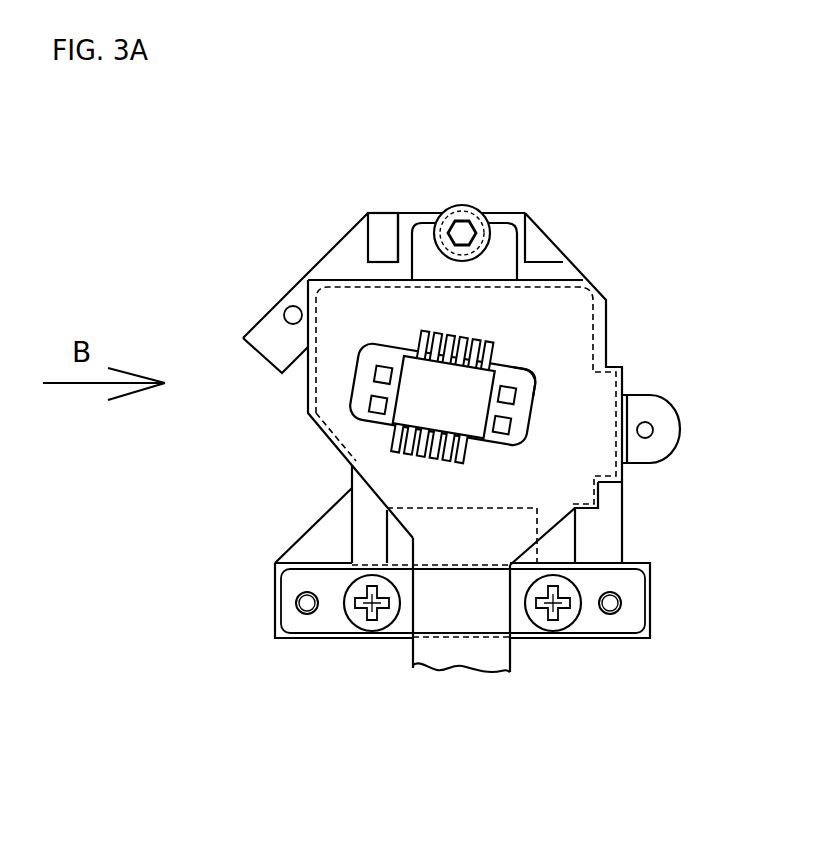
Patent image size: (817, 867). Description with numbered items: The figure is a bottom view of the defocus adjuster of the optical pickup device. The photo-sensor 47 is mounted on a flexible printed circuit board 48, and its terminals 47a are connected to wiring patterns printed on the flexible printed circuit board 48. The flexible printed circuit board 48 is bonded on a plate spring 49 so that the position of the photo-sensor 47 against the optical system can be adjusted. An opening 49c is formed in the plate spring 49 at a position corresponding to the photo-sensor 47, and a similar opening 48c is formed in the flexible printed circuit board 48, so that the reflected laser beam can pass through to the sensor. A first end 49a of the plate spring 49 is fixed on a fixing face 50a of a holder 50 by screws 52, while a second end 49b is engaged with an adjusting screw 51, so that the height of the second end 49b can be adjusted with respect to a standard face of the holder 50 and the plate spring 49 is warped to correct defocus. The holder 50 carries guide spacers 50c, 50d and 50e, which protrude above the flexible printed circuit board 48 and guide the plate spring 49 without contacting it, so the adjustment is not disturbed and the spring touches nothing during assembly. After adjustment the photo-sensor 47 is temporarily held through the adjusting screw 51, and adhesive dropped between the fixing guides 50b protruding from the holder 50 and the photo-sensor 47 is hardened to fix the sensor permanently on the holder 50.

The photo-sensor 47 is at (430, 380).
The terminals 47a is at (500, 345).
The flexible printed circuit board 48 is at (593, 462).
The opening 48c is at (378, 337).
The plate spring 49 is at (367, 518).
The first end 49a is at (310, 615).
The second end 49b is at (503, 237).
The opening 49c is at (533, 382).
The holder 50 is at (312, 550).
The fixing face 50a is at (603, 627).
The fixing guides 50b is at (508, 395).
The guide spacer 50c is at (380, 235).
The guide spacer 50d is at (270, 348).
The guide spacer 50e is at (660, 448).
The adjusting screw 51 is at (463, 205).
The screws 52 is at (365, 622).